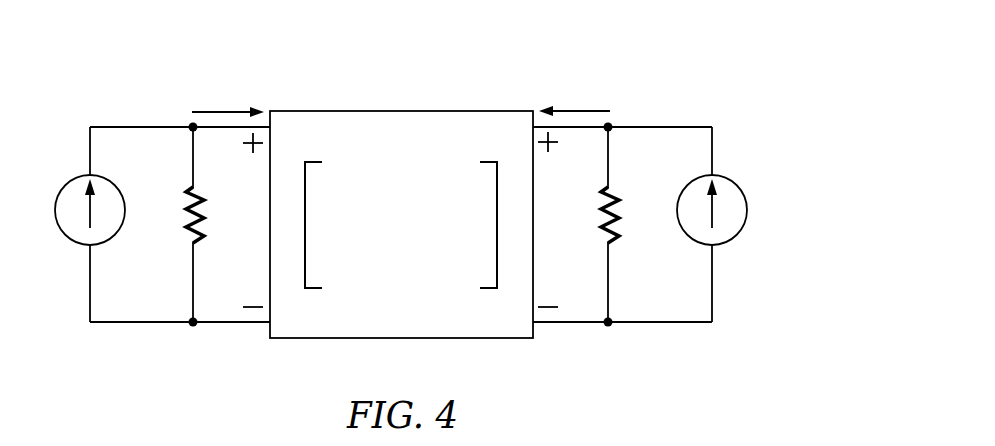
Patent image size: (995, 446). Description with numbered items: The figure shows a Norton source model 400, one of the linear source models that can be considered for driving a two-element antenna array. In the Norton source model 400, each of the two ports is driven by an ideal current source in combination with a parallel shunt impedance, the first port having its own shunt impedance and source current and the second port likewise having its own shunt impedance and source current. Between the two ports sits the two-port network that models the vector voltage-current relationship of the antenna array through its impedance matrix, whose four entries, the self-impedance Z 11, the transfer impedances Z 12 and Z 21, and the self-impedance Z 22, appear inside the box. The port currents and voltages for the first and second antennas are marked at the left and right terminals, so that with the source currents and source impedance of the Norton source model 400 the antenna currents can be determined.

The Norton source model 400 is at (401, 188).
The impedance matrix element Z11 11 is at (337, 183).
The impedance matrix element Z12 12 is at (465, 183).
The impedance matrix element Z21 21 is at (338, 267).
The impedance matrix element Z22 22 is at (466, 267).